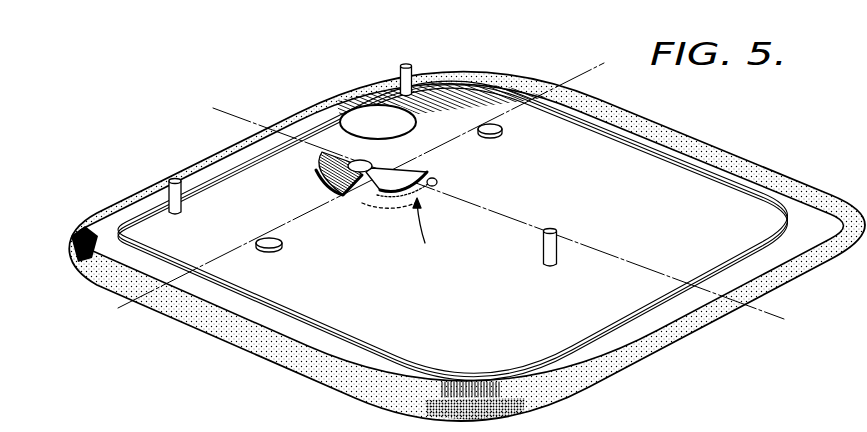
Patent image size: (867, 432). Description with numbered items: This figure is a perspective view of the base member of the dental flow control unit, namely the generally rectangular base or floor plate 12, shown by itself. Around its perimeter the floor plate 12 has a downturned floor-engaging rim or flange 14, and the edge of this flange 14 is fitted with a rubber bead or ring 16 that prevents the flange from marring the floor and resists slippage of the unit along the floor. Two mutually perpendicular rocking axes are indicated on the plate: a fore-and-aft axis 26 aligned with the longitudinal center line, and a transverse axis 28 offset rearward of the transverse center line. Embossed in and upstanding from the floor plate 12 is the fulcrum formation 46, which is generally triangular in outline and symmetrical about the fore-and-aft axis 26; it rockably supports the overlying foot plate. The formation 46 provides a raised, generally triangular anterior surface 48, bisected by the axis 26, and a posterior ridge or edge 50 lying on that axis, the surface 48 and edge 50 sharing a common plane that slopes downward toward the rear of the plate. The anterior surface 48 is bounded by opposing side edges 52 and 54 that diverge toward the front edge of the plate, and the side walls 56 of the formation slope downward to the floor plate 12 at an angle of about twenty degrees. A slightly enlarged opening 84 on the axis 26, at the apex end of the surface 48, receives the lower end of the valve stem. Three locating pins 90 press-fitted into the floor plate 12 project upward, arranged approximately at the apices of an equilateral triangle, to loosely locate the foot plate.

The base or floor plate 12 is at (715, 188).
The floor-engaging rim or flange 14 is at (274, 318).
The rubber bead or ring 16 is at (363, 398).
The fore-and-aft axis 26 is at (784, 320).
The transverse axis 28 is at (580, 66).
The fulcrum formation 46 is at (415, 233).
The anterior surface 48 is at (430, 174).
The posterior ridge or edge 50 is at (350, 160).
The side edge 52 is at (366, 197).
The side edge 54 is at (415, 167).
The side walls 56 is at (322, 174).
The opening 84 is at (362, 158).
The locating pins 90 is at (168, 190).